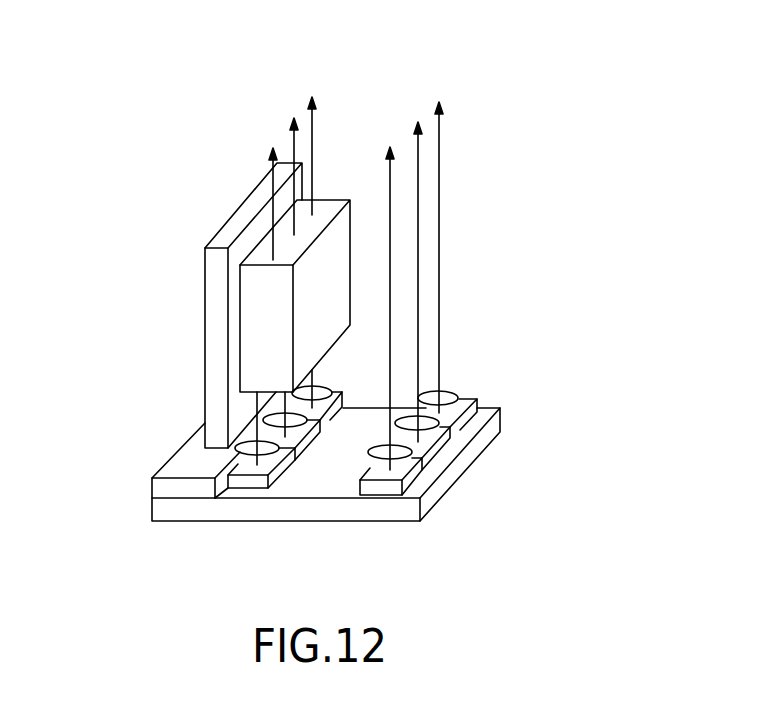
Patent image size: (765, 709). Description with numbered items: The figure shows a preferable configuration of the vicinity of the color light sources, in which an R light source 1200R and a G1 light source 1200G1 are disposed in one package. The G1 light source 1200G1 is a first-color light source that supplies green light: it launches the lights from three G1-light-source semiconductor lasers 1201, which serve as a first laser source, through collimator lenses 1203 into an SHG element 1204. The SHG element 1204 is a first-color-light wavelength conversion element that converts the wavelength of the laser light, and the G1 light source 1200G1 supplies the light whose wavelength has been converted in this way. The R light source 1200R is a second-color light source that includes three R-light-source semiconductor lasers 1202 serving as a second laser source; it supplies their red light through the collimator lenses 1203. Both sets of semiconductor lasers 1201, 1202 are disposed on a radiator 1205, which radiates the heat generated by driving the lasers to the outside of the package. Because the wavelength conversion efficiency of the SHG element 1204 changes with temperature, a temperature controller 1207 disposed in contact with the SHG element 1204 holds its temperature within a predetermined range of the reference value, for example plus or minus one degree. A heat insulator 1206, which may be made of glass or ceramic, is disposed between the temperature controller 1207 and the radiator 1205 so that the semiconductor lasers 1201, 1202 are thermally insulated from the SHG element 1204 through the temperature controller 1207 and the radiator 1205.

The G1 light source 1200G1 is at (355, 135).
The R light source 1200R is at (513, 380).
The G1-light-source semiconductor lasers 1201 is at (253, 483).
The R-light-source semiconductor lasers 1202 is at (383, 492).
The collimator lenses 1203 is at (248, 453).
The SHG element 1204 is at (258, 313).
The radiator 1205 is at (457, 460).
The heat insulator 1206 is at (162, 492).
The temperature controller 1207 is at (237, 223).